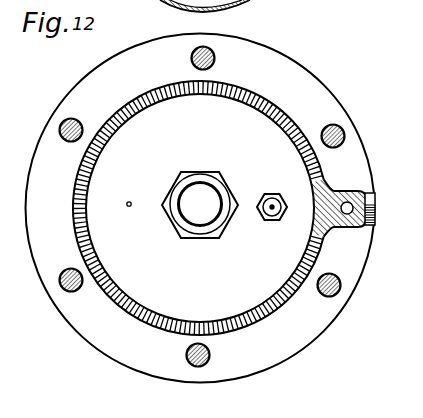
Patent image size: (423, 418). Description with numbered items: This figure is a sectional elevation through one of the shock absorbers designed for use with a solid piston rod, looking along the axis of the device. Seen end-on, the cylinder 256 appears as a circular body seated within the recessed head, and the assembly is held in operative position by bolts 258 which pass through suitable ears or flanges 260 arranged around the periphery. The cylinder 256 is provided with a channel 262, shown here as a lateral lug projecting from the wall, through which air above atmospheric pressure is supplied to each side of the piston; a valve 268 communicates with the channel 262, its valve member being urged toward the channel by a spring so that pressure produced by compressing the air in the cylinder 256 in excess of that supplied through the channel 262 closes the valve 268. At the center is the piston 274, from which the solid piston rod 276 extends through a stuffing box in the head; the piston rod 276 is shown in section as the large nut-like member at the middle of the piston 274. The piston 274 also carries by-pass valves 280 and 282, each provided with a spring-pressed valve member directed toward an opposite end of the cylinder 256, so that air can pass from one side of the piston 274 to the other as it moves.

The cylinder 256 is at (322, 222).
The bolts 258 is at (214, 52).
The ears or flanges 260 is at (323, 97).
The channel 262 is at (351, 201).
The valve 268 is at (371, 226).
The piston 274 is at (234, 110).
The piston rod 276 is at (202, 216).
The by-pass valve 280 is at (130, 202).
The by-pass valve 282 is at (272, 204).